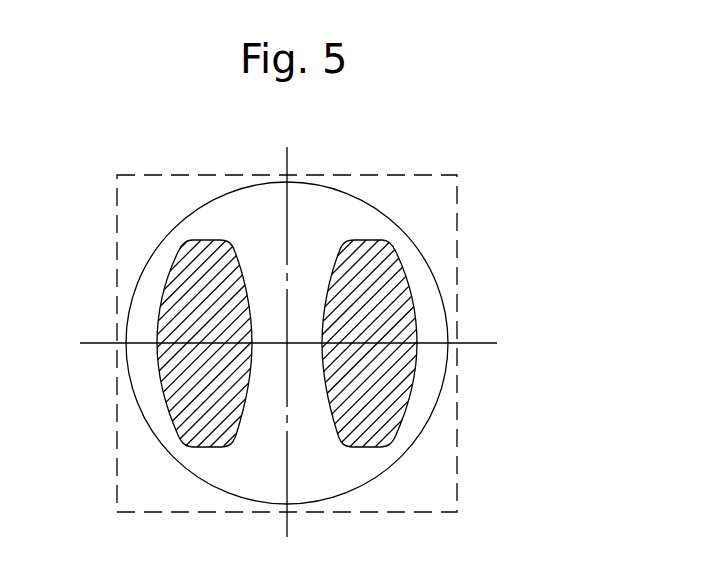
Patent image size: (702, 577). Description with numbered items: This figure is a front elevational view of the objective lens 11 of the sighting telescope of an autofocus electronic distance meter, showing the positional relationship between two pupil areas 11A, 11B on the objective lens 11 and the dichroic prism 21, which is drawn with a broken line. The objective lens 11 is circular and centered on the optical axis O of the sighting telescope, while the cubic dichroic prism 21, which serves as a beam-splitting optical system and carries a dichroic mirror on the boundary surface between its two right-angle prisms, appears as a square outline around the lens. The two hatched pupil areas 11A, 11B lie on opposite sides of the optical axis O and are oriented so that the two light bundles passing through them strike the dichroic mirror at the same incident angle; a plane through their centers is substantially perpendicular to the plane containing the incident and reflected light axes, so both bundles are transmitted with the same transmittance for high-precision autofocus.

The objective lens 11 is at (367, 214).
The pupil area 11A is at (172, 322).
The pupil area 11B is at (407, 316).
The dichroic prism 21 is at (430, 442).
The optical axis O is at (287, 345).